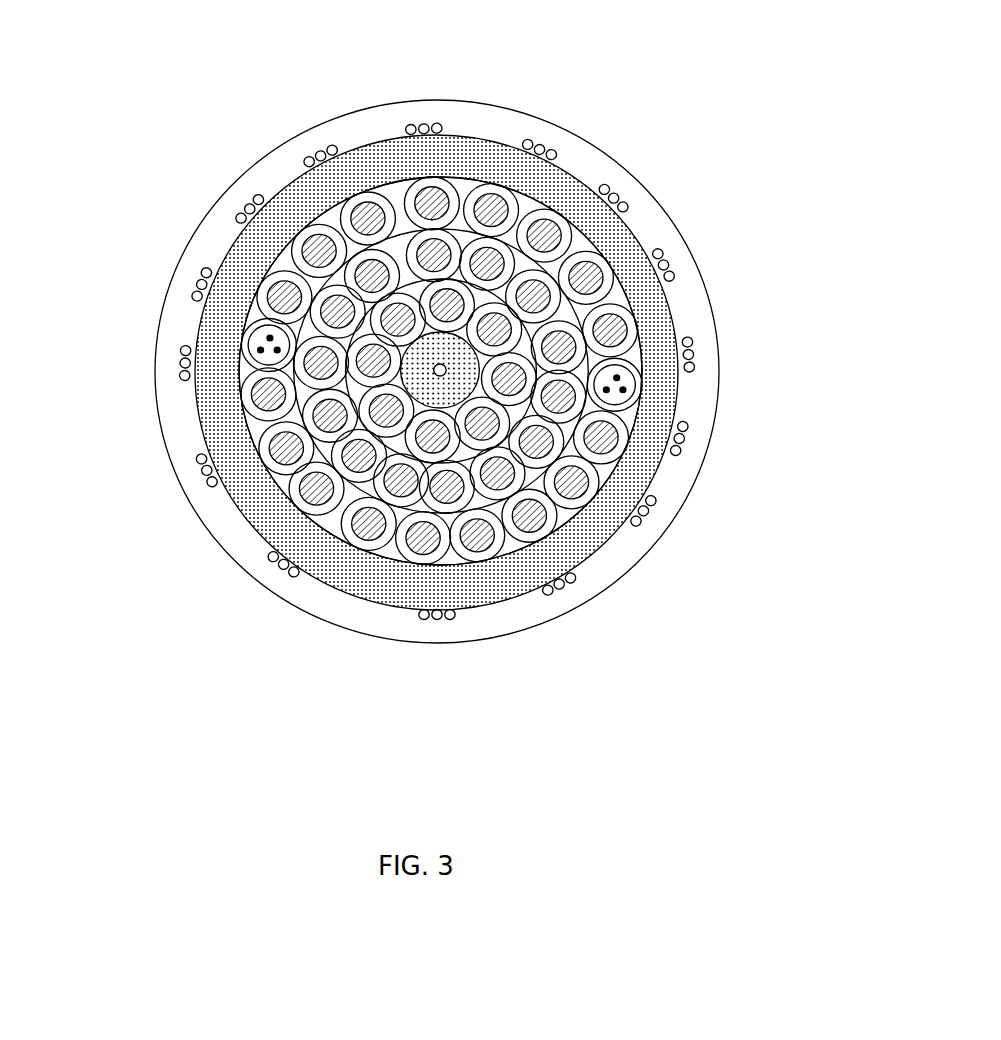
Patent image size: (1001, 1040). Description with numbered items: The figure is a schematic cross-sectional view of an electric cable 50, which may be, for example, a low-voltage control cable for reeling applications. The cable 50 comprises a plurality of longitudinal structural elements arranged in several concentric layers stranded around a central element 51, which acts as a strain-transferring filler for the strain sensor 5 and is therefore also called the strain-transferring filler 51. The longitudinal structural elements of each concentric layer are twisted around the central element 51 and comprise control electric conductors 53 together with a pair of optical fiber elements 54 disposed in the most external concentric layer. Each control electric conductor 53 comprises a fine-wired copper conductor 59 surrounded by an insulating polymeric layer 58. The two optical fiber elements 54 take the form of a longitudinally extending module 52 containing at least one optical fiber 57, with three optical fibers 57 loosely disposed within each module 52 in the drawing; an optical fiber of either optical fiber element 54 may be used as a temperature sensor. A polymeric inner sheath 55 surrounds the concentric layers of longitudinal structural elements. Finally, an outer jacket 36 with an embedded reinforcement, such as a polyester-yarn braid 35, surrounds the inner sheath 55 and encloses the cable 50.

The electric cable 50 is at (410, 383).
The strain sensor 5 is at (439, 364).
The central element 51 is at (440, 370).
The module 52 is at (248, 328).
The control electric conductor 53 is at (270, 268).
The optical fiber element 54 is at (238, 342).
The polymeric inner sheath 55 is at (265, 510).
The polyester-yarn braid 35 is at (250, 200).
The outer jacket 36 is at (383, 628).
The optical fiber 57 is at (260, 353).
The insulating polymeric layer 58 is at (556, 527).
The fine-wired copper conductor 59 is at (527, 533).